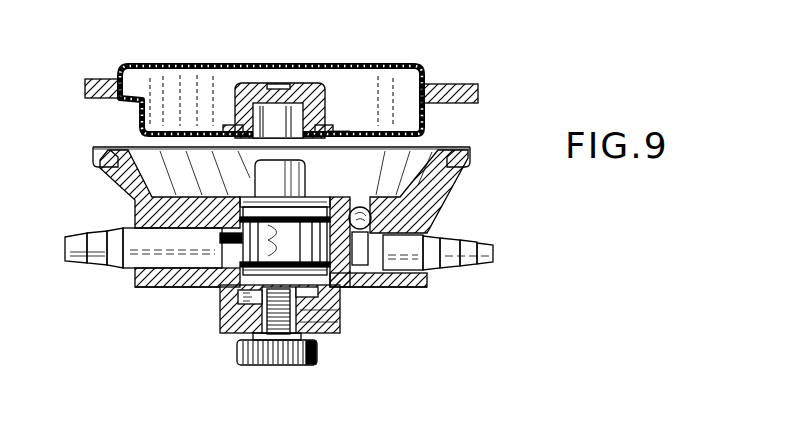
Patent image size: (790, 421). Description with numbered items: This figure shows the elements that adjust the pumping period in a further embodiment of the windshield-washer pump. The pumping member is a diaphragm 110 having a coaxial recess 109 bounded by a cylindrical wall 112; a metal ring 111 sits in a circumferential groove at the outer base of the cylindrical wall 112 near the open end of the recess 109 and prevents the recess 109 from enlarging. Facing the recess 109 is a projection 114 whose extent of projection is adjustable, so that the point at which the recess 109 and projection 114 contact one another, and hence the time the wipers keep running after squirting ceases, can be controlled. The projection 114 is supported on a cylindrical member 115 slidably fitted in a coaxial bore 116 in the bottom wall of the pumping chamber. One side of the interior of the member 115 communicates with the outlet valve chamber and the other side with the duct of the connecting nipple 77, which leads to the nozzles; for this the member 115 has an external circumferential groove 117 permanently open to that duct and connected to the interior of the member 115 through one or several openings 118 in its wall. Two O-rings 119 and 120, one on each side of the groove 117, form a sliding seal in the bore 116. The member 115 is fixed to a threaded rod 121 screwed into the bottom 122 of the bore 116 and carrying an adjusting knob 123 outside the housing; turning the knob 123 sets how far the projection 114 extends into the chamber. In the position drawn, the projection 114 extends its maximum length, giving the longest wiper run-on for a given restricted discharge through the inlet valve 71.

The diaphragm 110 is at (185, 87).
The coaxial recess 109 is at (307, 83).
The cylindrical wall 112 is at (323, 108).
The metal ring 111 is at (335, 128).
The inlet valve 71 is at (428, 152).
The O-ring 119 is at (255, 206).
The projection 114 is at (280, 180).
The openings 118 is at (135, 212).
The connecting nipple 77 is at (80, 268).
The external circumferential groove 117 is at (383, 290).
The cylindrical member 115 is at (297, 287).
The coaxial bore 116 is at (240, 303).
The O-ring 120 is at (342, 308).
The threaded rod 121 is at (250, 330).
The bottom of bore 122 is at (318, 335).
The adjusting knob 123 is at (278, 358).